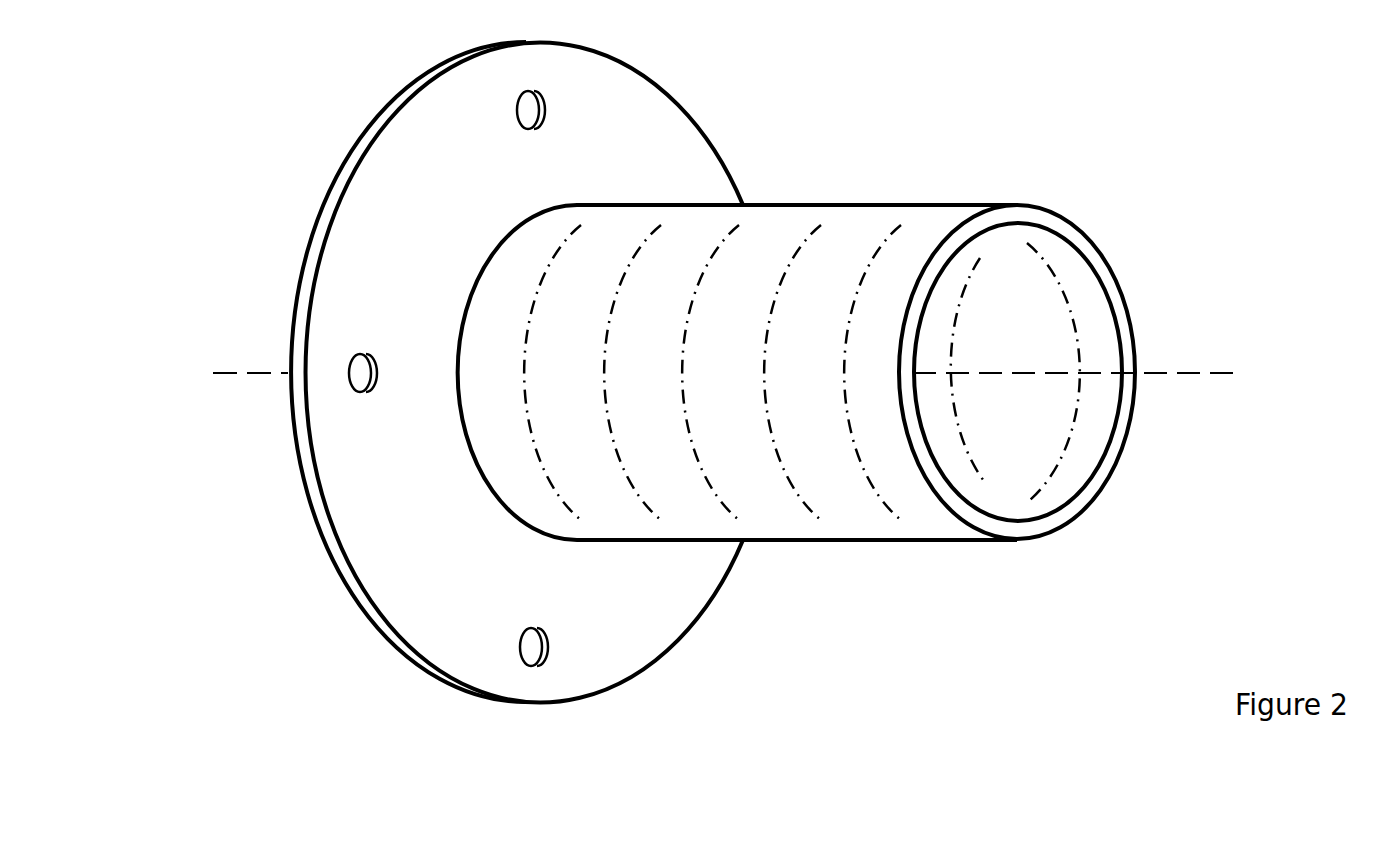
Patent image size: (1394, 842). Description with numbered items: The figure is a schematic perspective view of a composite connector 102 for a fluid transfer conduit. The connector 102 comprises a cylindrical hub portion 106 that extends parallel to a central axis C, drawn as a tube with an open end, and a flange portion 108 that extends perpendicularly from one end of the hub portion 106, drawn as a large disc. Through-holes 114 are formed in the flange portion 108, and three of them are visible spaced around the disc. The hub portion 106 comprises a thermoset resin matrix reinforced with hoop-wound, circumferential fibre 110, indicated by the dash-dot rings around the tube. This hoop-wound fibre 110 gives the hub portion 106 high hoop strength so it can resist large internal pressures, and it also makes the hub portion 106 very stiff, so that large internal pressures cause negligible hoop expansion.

The composite connector 102 is at (722, 414).
The cylindrical hub portion 106 is at (1010, 498).
The flange portion 108 is at (663, 598).
The hoop-wound fibre 110 is at (862, 452).
The through-holes 114 is at (529, 110).